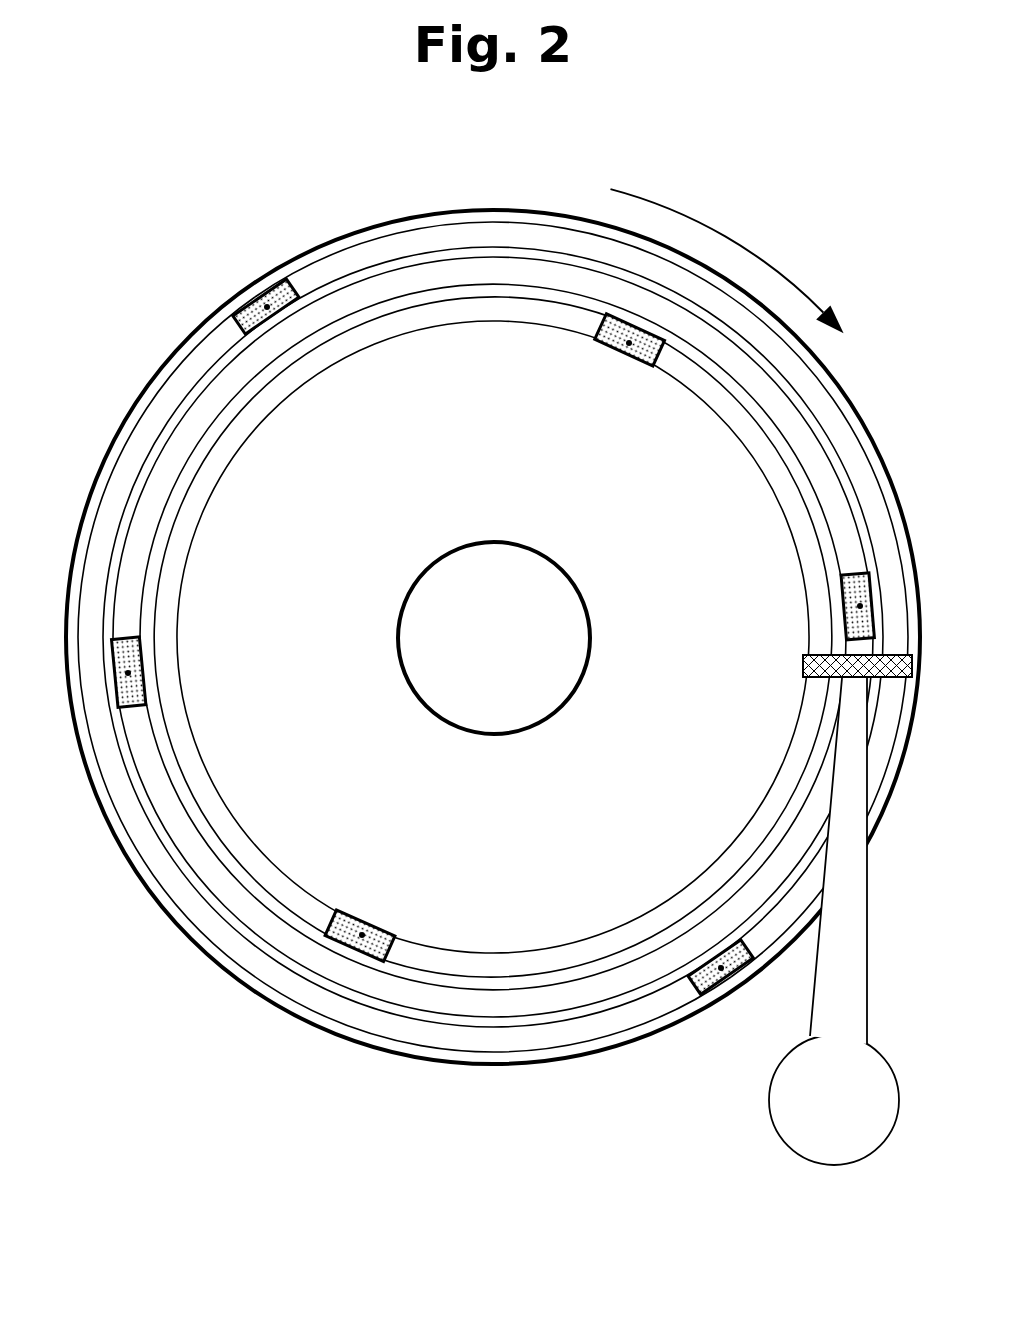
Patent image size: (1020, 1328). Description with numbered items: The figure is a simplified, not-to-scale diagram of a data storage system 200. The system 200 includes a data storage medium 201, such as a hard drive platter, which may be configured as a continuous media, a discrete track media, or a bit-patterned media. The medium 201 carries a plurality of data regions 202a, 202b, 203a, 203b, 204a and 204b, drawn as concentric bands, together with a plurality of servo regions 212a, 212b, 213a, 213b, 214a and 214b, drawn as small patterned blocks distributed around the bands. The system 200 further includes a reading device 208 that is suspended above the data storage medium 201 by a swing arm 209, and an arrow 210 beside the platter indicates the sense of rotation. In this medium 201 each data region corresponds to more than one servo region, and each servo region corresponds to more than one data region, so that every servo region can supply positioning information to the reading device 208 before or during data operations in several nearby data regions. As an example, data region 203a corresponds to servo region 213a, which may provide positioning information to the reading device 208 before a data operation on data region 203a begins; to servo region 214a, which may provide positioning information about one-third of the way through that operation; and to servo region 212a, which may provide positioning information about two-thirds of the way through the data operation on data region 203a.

The data storage system 200 is at (265, 201).
The data storage medium 201 is at (187, 348).
The data region 202a is at (404, 674).
The data region 202b is at (581, 599).
The data region 203a is at (493, 447).
The data region 203b is at (493, 828).
The data region 204a is at (390, 624).
The data region 204b is at (596, 650).
The reading device 208 is at (804, 656).
The swing arm 209 is at (834, 921).
The rotation direction 210 is at (717, 232).
The servo region 212a is at (267, 307).
The servo region 212b is at (721, 968).
The servo region 213a is at (860, 606).
The servo region 213b is at (128, 673).
The servo region 214a is at (629, 343).
The servo region 214b is at (362, 935).